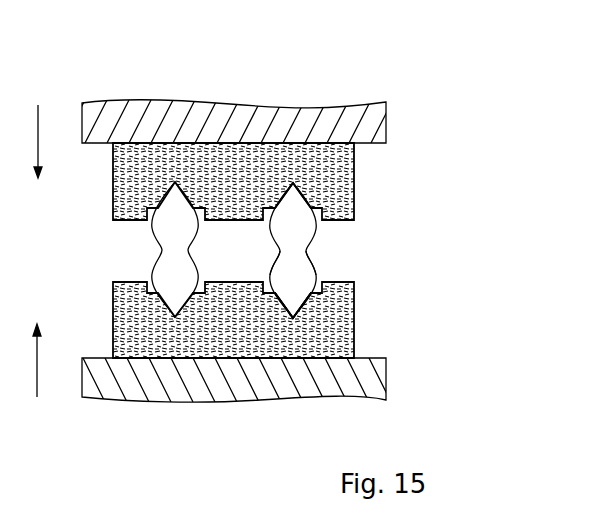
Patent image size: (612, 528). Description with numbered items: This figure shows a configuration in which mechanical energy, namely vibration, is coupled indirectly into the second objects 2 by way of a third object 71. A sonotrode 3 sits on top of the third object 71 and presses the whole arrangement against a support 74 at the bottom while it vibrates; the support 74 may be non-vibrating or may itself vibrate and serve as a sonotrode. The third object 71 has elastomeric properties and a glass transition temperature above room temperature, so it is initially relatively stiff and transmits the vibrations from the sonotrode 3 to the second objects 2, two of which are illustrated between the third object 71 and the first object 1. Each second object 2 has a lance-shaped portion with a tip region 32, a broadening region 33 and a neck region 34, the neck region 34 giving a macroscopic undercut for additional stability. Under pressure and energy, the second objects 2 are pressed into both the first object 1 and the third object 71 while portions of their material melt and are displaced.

The sonotrode 3 is at (108, 108).
The support 74 is at (170, 383).
The third object 71 is at (352, 178).
The first object 1 is at (354, 317).
The second object 2 is at (295, 270).
The broadening region 33 is at (302, 212).
The neck region 34 is at (293, 257).
The tip region 32 is at (283, 300).